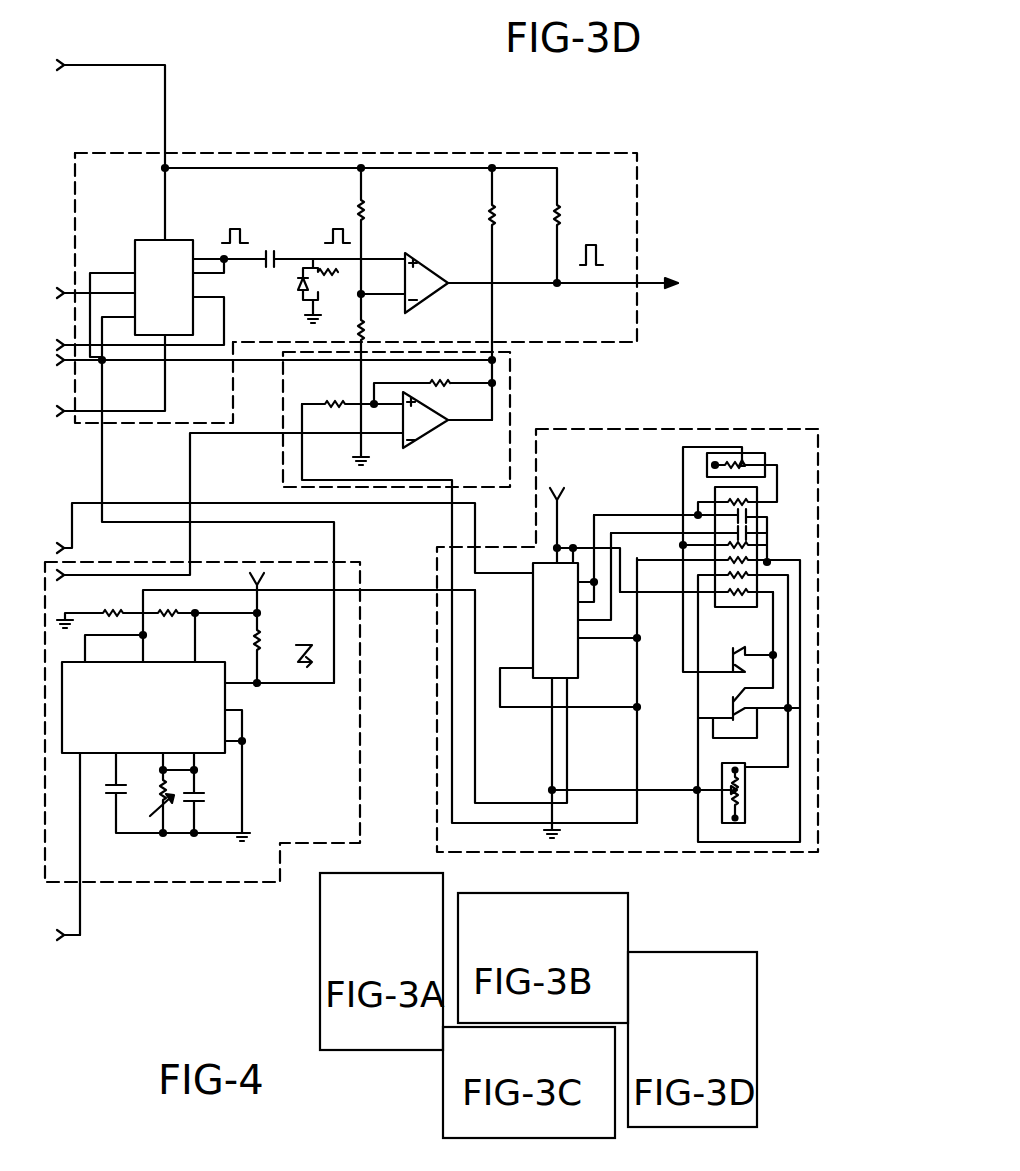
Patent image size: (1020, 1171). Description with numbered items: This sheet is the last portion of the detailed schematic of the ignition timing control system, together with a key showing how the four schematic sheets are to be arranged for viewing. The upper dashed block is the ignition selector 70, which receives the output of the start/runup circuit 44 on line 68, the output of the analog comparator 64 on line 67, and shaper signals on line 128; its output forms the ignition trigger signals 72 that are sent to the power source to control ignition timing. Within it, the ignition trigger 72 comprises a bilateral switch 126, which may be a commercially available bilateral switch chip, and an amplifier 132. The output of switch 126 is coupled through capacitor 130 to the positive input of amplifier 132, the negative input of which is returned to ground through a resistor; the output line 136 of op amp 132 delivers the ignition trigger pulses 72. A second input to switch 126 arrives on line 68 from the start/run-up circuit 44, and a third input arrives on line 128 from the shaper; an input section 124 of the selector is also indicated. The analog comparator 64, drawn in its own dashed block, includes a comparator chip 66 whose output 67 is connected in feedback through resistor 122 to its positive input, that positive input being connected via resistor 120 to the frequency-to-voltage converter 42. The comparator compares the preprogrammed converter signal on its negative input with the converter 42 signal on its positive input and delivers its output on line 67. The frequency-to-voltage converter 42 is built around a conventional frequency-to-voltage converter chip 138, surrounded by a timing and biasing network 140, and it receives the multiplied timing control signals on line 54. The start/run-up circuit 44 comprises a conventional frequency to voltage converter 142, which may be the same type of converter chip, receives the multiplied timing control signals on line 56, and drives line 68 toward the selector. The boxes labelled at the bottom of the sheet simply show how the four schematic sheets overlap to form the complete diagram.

The ignition selector 70 is at (288, 152).
The line from shaper 128 is at (103, 290).
The capacitor 130 is at (298, 231).
The bilateral switch 126 is at (193, 291).
The input circuit 124 is at (188, 356).
The amplifier 132 is at (449, 230).
The output line 136 is at (522, 287).
The ignition trigger 72 is at (700, 304).
The resistor 120 is at (336, 378).
The resistor 122 is at (437, 386).
The analog comparator 64 is at (512, 378).
The line 67 is at (493, 408).
The comparator chip 66 is at (431, 437).
The timing network 140 is at (648, 497).
The line 54 is at (500, 578).
The frequency-to-voltage converter chip 138 is at (533, 632).
The frequency to voltage converter 142 is at (152, 798).
The line 68 is at (296, 687).
The frequency-to-voltage converter 42 is at (433, 807).
The start/runup circuit 44 is at (152, 884).
The line 56 is at (85, 937).